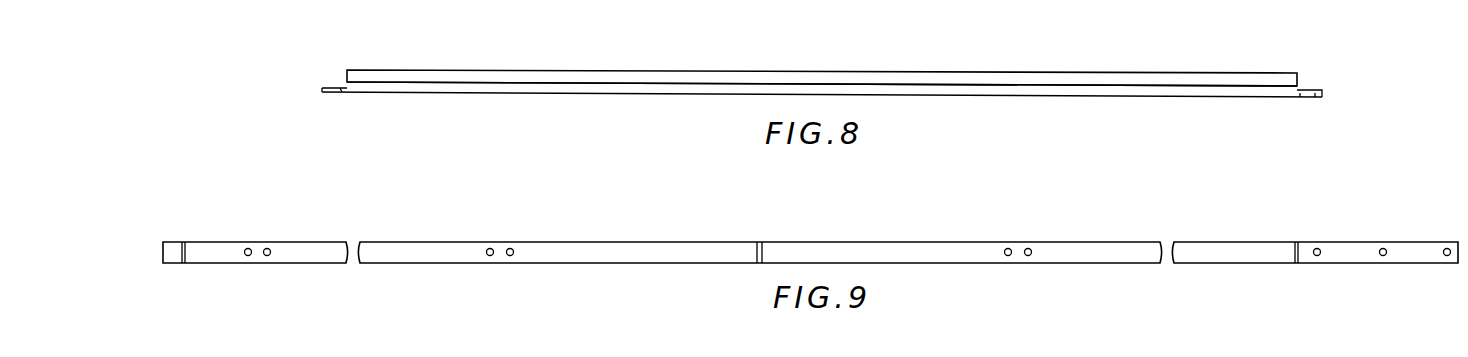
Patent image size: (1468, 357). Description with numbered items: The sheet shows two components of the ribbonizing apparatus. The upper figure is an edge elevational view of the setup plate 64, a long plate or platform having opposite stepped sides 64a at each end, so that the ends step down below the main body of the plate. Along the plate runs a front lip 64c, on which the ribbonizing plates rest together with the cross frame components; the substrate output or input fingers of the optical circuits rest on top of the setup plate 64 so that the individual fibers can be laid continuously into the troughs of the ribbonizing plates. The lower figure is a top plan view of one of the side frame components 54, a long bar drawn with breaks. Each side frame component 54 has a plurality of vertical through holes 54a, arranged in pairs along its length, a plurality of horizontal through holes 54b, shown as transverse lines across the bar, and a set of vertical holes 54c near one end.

In FIG. 8, the setup plate 64 is at (553, 76).
In FIG. 8, the stepped sides 64a is at (322, 89).
In FIG. 8, the front lip 64c is at (647, 83).
In FIG. 9, the side frame component 54 is at (938, 248).
In FIG. 9, the vertical through holes 54a is at (267, 256).
In FIG. 9, the horizontal through holes 54b is at (183, 242).
In FIG. 9, the vertical holes 54c is at (1319, 248).